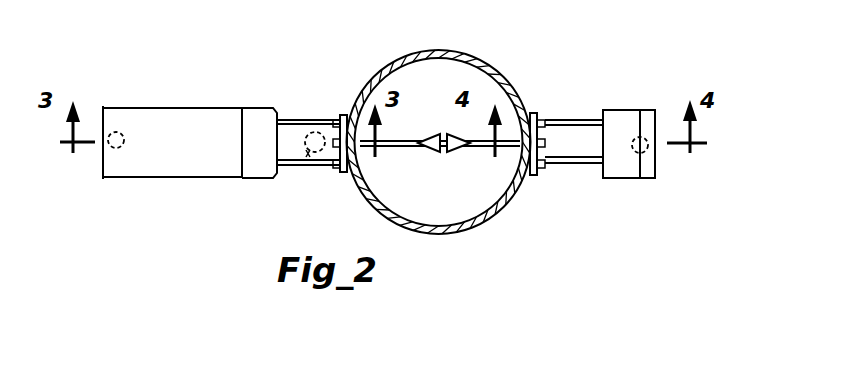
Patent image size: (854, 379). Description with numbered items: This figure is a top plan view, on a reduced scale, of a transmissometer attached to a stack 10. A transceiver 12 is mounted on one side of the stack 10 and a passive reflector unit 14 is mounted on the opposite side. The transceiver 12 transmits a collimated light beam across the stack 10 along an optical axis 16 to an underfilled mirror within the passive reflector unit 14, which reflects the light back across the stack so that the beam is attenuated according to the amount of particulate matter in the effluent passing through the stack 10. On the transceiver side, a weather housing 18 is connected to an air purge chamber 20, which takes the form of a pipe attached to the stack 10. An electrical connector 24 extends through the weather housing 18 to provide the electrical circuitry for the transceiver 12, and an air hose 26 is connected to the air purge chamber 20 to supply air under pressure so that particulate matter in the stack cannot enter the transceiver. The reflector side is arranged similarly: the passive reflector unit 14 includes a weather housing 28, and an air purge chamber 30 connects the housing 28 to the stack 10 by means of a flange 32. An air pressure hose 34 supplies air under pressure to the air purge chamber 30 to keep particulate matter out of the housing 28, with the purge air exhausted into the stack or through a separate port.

The stack 10 is at (440, 50).
The transceiver 12 is at (258, 105).
The passive reflector unit 14 is at (637, 106).
The optical axis 16 is at (436, 153).
The weather housing 18 is at (187, 164).
The air purge chamber 20 is at (306, 120).
The electrical connector 24 is at (124, 156).
The air hose 26 is at (314, 180).
The weather housing 28 is at (612, 178).
The air purge chamber 30 is at (573, 122).
The flange 32 is at (545, 180).
The air pressure hose 34 is at (648, 150).